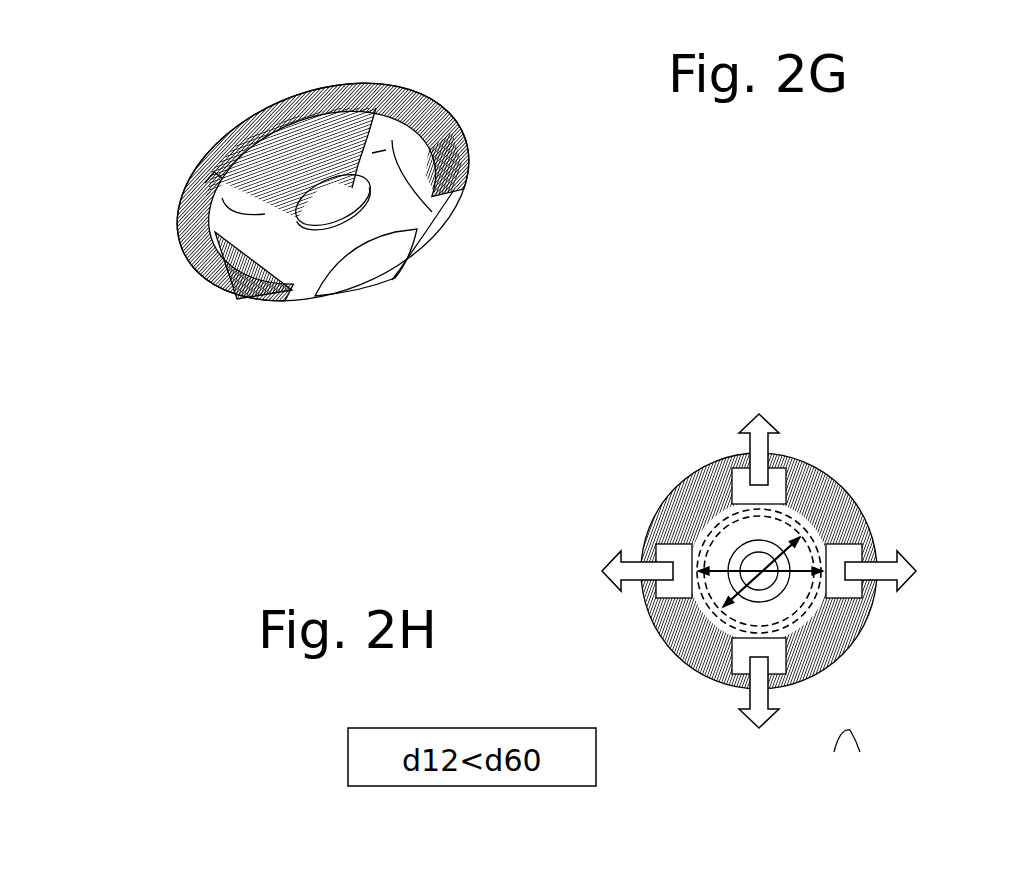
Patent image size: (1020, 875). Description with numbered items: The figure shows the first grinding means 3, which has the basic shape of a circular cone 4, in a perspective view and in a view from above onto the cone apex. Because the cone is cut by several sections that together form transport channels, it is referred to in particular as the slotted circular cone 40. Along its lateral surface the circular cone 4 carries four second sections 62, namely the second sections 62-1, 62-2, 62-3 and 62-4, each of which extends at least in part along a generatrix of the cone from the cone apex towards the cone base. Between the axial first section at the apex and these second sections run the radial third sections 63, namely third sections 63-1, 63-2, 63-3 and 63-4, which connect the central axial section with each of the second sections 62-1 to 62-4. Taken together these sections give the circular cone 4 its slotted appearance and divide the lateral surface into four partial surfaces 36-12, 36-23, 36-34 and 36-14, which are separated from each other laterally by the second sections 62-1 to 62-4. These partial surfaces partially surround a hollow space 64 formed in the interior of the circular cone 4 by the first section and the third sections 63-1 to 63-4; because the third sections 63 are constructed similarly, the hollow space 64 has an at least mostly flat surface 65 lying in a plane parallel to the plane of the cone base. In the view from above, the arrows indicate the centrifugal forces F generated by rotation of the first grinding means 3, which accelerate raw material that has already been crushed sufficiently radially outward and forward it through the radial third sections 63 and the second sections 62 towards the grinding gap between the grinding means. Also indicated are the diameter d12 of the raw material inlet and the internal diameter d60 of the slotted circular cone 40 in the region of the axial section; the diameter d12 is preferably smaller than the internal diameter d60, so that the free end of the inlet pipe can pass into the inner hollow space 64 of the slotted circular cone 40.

In FIG. 2G, the partial surface 36-12 is at (224, 168).
In FIG. 2G, the partial surface 36-14 is at (468, 148).
In FIG. 2G, the partial surface 36-23 is at (195, 273).
In FIG. 2G, the partial surface 36-34 is at (375, 300).
In FIG. 2G, the second section 62 is at (329, 198).
In FIG. 2G, the second section 62-1 is at (352, 100).
In FIG. 2G, the second section 62-2 is at (205, 175).
In FIG. 2G, the second section 62-3 is at (253, 305).
In FIG. 2G, the second section 62-4 is at (455, 188).
In FIG. 2G, the third section 63 is at (323, 227).
In FIG. 2G, the third section 63-1 is at (392, 140).
In FIG. 2G, the third section 63-2 is at (211, 170).
In FIG. 2G, the third section 63-3 is at (278, 300).
In FIG. 2G, the third section 63-4 is at (455, 192).
In FIG. 2G, the hollow space 64 is at (302, 255).
In FIG. 2G, the flat surface 65 is at (330, 255).
In FIG. 2H, the flat surface 65 is at (637, 592).
In FIG. 2H, the internal diameter d60 is at (803, 516).
In FIG. 2H, the diameter d12 is at (700, 629).
In FIG. 2H, the centrifugal forces F is at (756, 574).
In FIG. 2H, the first grinding means 3 is at (862, 749).
In FIG. 2H, the circular cone 4 is at (862, 749).
In FIG. 2H, the slotted circular cone 40 is at (862, 749).